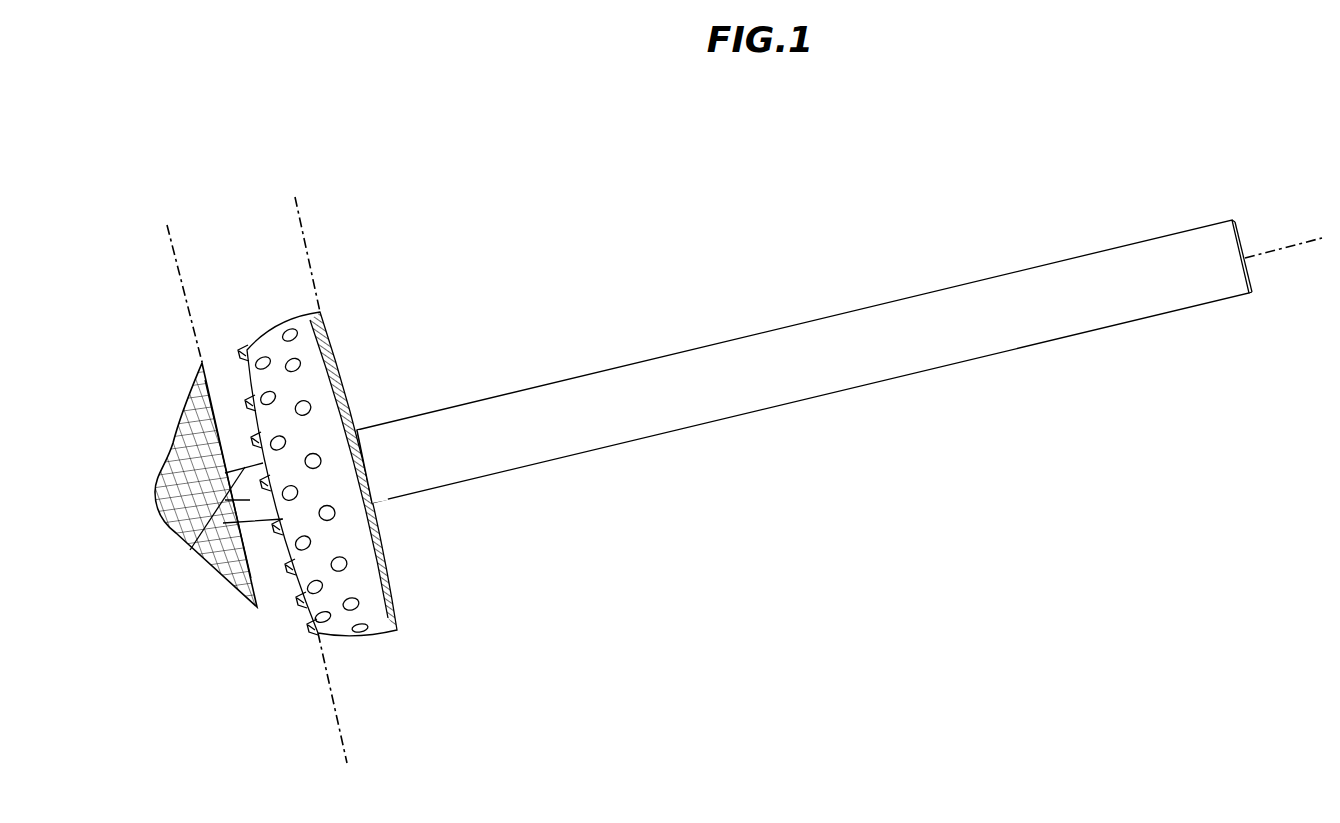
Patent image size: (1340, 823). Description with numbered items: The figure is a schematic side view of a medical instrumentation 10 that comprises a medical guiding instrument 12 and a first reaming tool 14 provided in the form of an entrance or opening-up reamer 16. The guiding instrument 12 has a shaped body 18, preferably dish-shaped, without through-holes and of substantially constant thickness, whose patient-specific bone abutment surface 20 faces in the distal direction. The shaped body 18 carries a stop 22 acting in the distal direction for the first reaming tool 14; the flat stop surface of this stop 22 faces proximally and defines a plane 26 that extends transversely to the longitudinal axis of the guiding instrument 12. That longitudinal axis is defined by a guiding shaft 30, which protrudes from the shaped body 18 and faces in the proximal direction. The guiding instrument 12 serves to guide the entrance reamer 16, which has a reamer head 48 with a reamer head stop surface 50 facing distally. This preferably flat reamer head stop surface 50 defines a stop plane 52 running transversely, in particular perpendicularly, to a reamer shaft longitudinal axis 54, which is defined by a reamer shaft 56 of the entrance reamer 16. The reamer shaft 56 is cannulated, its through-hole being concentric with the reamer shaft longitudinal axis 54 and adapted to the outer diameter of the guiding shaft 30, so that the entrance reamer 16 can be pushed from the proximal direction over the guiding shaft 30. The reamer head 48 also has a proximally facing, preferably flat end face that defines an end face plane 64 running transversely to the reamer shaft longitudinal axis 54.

The medical instrumentation 10 is at (626, 270).
The medical guiding instrument 12 is at (210, 588).
The first reaming tool 14 is at (898, 281).
The entrance reamer 16 is at (892, 394).
The shaped body 18 is at (170, 493).
The patient-specific bone abutment surface 20 is at (183, 400).
The stop 22 is at (214, 358).
The plane 26 is at (175, 250).
The guiding shaft 30 is at (198, 558).
The reamer head 48 is at (382, 617).
The reamer head stop surface 50 is at (301, 592).
The stop plane 52 is at (343, 737).
The reamer shaft longitudinal axis 54 is at (1289, 243).
The reamer shaft 56 is at (723, 393).
The end face plane 64 is at (300, 221).